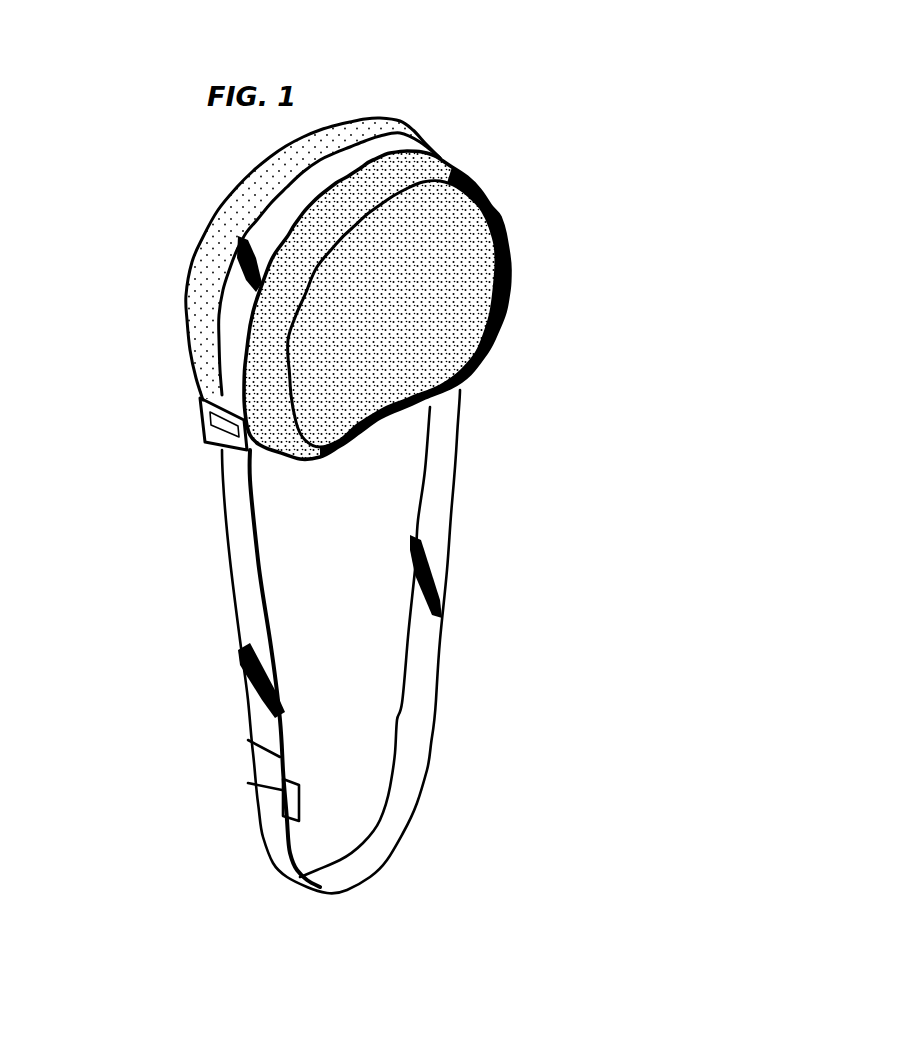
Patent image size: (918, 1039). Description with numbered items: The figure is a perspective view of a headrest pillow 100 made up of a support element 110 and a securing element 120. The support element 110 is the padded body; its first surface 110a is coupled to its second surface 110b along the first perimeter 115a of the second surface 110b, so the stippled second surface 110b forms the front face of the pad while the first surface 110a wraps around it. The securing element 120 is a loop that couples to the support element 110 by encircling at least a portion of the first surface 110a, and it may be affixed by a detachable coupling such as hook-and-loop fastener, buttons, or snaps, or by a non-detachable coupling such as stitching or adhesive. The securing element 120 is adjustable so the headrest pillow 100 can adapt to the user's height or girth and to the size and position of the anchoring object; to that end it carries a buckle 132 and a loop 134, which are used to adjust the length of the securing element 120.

The headrest pillow 100 is at (393, 104).
The support element 110 is at (437, 273).
The first surface 110a is at (437, 160).
The second surface 110b is at (437, 323).
The first perimeter 115a is at (510, 275).
The securing element 120 is at (437, 497).
The buckle 132 is at (200, 418).
The loop 134 is at (247, 775).